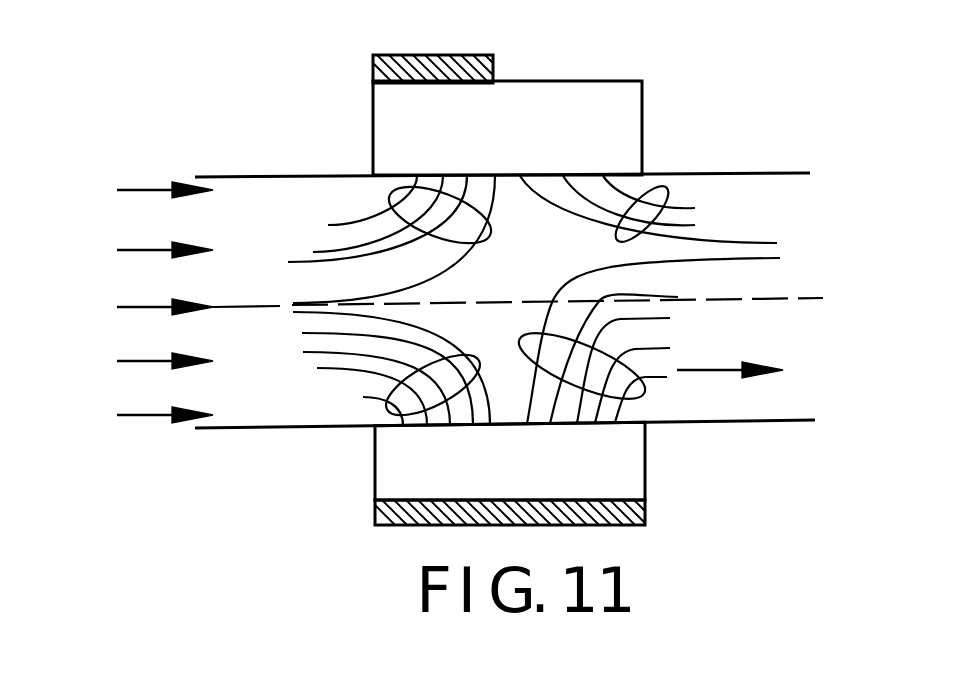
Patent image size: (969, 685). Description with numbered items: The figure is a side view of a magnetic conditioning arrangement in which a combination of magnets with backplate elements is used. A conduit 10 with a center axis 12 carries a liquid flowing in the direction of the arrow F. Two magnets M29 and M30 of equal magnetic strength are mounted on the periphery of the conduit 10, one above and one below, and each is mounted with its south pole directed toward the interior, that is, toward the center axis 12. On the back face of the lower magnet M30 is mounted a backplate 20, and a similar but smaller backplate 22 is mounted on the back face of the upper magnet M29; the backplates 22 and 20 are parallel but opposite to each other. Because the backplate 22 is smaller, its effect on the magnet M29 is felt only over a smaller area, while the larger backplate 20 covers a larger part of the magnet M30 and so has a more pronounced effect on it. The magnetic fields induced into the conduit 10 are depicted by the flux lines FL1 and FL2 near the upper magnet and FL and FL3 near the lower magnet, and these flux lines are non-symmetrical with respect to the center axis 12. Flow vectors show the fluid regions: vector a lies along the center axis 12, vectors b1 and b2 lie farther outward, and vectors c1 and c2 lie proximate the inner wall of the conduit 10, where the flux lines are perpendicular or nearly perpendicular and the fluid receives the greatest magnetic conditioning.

The conduit 10 is at (767, 173).
The center axis 12 is at (807, 298).
The backplate 20 is at (375, 512).
The backplate 22 is at (373, 62).
The magnet M29 is at (642, 117).
The magnet M30 is at (645, 472).
The flux lines FL1 is at (390, 196).
The flux lines FL2 is at (663, 188).
The flux lines FL is at (387, 409).
The flux lines FL3 is at (643, 392).
The flow direction arrow F is at (730, 360).
The flow vector a is at (182, 302).
The flow vector b1 is at (148, 255).
The flow vector b2 is at (148, 365).
The flow vector c1 is at (147, 188).
The flow vector c2 is at (149, 415).